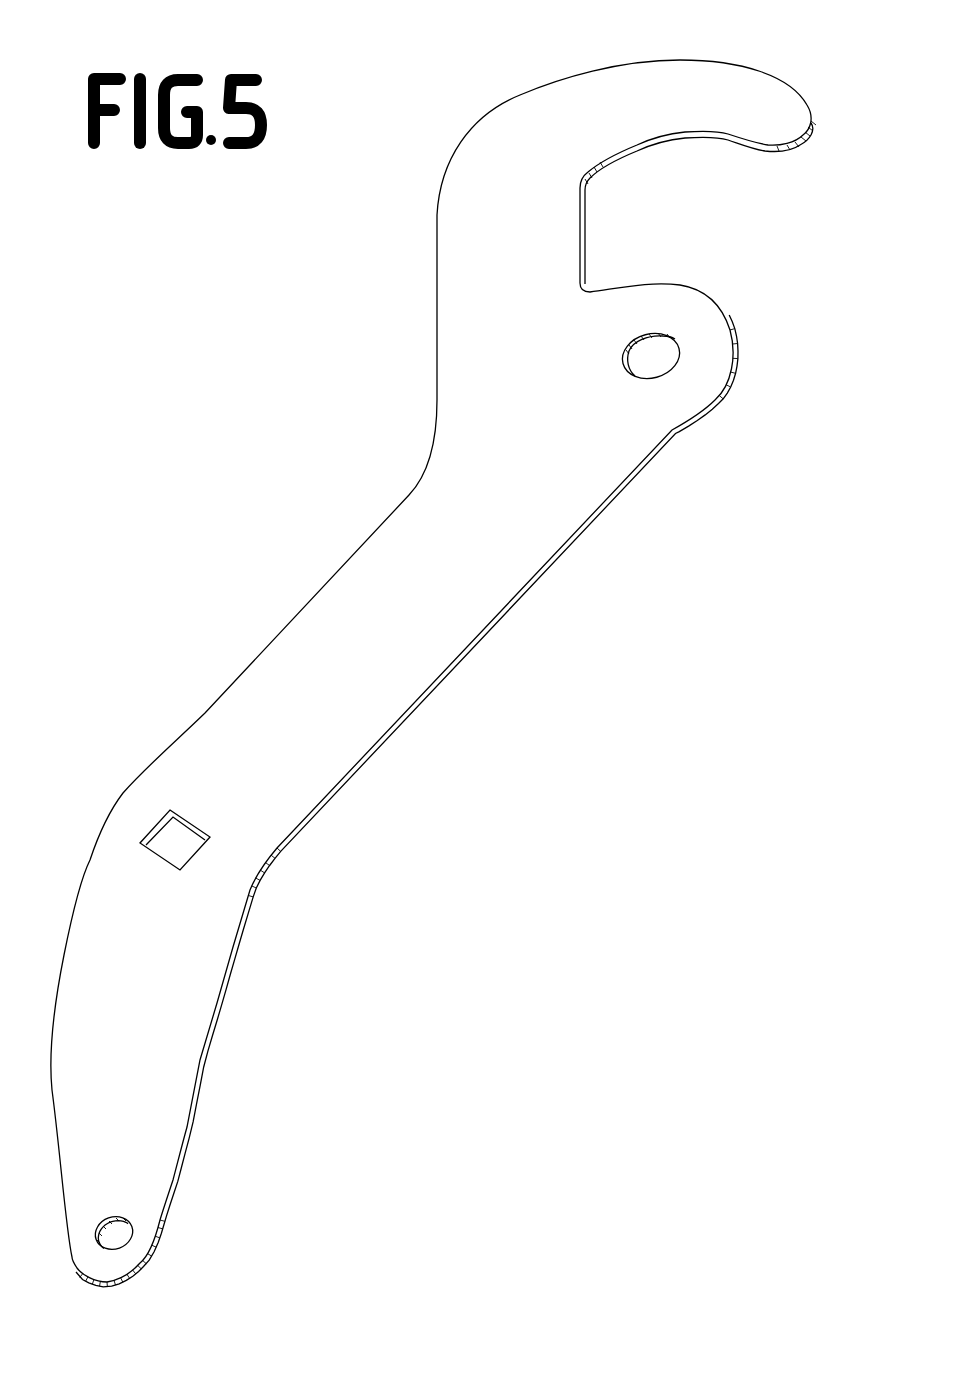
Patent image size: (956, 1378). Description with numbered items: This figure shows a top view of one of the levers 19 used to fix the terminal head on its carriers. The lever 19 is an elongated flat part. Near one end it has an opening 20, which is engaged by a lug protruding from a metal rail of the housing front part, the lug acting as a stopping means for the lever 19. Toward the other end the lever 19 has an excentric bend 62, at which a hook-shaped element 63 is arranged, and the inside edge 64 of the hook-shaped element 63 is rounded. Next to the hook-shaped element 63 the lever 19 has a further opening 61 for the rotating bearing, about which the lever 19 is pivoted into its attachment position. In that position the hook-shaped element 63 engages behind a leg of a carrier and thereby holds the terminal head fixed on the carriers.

The lever 19 is at (333, 513).
The opening 20 is at (165, 842).
The opening 61 is at (662, 357).
The excentric bend 62 is at (487, 152).
The hook-shaped element 63 is at (770, 98).
The inside edge 64 is at (720, 137).